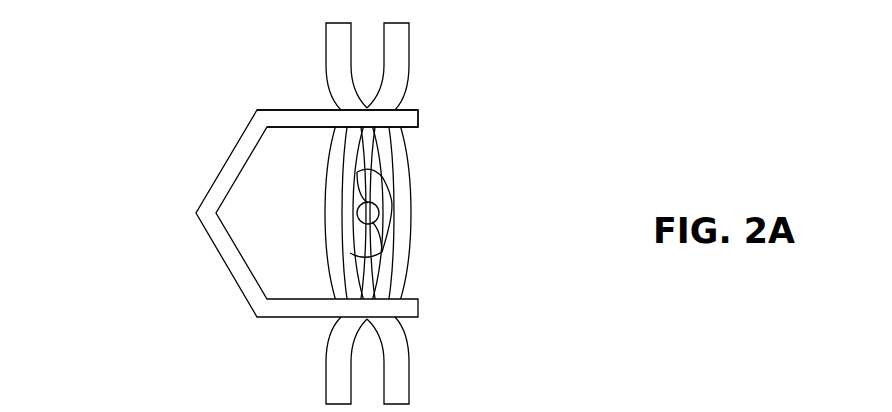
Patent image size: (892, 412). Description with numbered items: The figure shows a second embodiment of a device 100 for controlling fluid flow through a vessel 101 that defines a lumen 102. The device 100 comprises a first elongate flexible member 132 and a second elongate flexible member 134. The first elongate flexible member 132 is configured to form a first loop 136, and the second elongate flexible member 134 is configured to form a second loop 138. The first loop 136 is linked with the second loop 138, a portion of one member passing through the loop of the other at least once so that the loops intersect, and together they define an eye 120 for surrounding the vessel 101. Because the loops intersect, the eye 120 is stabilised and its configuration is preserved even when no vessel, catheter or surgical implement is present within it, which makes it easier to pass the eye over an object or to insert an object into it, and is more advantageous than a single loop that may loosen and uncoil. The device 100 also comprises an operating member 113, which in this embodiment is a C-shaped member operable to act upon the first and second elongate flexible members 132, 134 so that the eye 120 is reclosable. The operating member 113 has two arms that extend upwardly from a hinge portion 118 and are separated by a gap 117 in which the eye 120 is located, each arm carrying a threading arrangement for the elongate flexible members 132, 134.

The device 100 is at (234, 8).
The vessel 101 is at (383, 212).
The lumen 102 is at (370, 213).
The operating member 113 is at (405, 114).
The gap 117 is at (445, 275).
The hinge portion 118 is at (196, 212).
The eye 120 is at (392, 205).
The first elongate flexible member 132 is at (397, 40).
The second elongate flexible member 134 is at (397, 383).
The first loop 136 is at (340, 165).
The second loop 138 is at (338, 263).